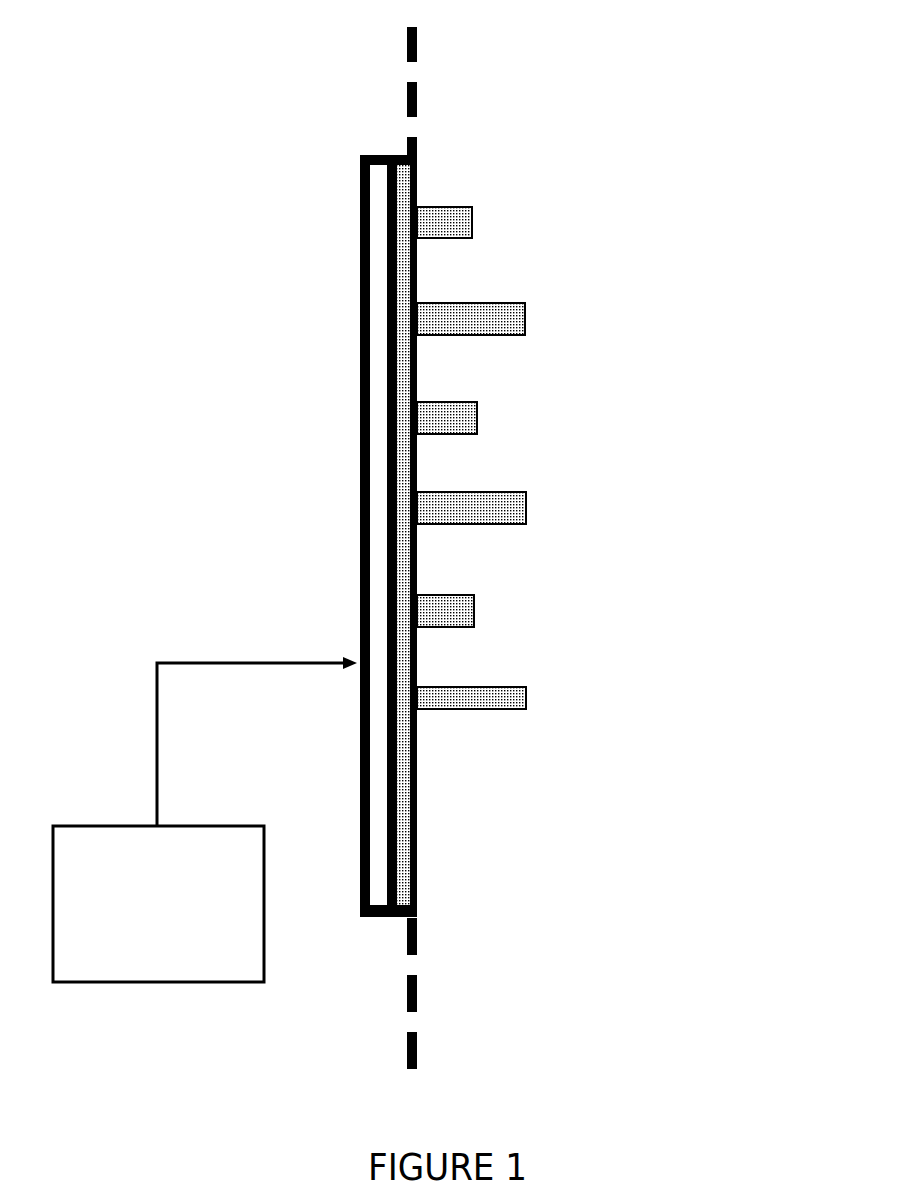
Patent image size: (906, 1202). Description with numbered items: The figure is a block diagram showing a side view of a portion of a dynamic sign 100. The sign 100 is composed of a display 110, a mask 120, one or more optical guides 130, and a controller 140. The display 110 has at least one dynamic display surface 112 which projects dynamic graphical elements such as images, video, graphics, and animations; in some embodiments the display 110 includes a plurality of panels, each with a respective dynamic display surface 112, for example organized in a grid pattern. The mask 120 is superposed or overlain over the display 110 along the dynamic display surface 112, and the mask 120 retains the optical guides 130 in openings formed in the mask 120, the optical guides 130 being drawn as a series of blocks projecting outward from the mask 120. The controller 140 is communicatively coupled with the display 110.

The dynamic sign 100 is at (206, 96).
The display 110 is at (360, 243).
The dynamic display surface 112 is at (410, 262).
The mask 120 is at (417, 165).
The optical guides 130 is at (538, 626).
The controller 140 is at (185, 937).